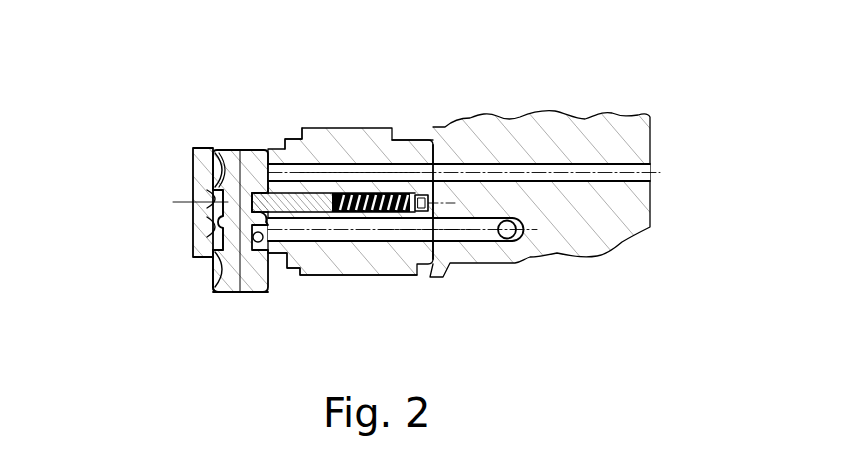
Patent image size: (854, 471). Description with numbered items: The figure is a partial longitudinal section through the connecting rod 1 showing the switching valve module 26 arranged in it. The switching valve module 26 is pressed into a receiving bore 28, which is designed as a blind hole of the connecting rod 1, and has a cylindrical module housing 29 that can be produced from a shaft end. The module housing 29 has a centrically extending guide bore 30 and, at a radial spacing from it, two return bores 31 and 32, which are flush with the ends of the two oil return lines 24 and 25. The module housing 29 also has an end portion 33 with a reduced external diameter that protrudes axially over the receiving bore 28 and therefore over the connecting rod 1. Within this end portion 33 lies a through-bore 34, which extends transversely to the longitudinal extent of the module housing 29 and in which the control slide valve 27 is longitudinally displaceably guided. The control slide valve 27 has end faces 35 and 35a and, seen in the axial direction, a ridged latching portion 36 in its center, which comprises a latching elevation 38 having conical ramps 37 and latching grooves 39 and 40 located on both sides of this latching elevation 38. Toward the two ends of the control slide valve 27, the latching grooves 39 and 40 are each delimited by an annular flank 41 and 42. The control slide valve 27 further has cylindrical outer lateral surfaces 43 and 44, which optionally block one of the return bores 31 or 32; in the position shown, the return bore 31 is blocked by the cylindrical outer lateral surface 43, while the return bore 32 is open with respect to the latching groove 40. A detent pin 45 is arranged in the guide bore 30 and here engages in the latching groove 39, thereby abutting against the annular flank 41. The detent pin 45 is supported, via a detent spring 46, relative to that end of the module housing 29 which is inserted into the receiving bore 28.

The connecting rod 1 is at (541, 96).
The oil return line 24 is at (615, 167).
The oil return line 25 is at (470, 235).
The switching valve module 26 is at (288, 286).
The control slide valve 27 is at (222, 297).
The receiving bore 28 is at (398, 130).
The module housing 29 is at (417, 150).
The guide bore 30 is at (372, 217).
The return bore 31 is at (340, 172).
The return bore 32 is at (385, 237).
The end portion 33 is at (283, 147).
The through-bore 34 is at (195, 192).
The end face 35 is at (240, 148).
The end face 35a is at (250, 293).
The ridged latching portion 36 is at (208, 244).
The conical ramp 37 is at (205, 200).
The latching elevation 38 is at (213, 222).
The latching groove 39 is at (210, 148).
The latching groove 40 is at (193, 255).
The annular flank 41 is at (221, 148).
The annular flank 42 is at (217, 293).
The cylindrical outer lateral surface 43 is at (193, 162).
The cylindrical outer lateral surface 44 is at (258, 297).
The detent pin 45 is at (297, 178).
The detent spring 46 is at (352, 180).